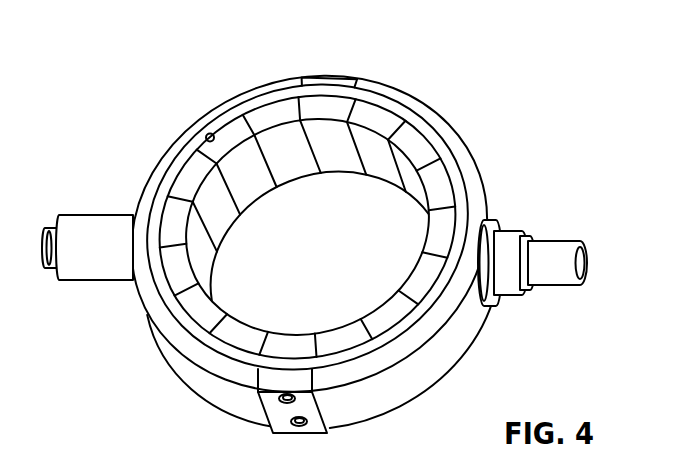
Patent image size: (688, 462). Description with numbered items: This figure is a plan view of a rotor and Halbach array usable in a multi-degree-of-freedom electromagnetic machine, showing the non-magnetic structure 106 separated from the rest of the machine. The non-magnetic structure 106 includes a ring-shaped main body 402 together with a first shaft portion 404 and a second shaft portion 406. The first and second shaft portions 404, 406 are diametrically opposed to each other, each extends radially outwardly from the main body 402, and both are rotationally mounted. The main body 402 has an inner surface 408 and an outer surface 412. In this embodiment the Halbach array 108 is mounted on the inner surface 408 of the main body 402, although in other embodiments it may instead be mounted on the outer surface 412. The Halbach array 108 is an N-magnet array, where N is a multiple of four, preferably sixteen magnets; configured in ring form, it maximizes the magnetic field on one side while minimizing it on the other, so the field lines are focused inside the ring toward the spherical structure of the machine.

The non-magnetic structure 106 is at (321, 228).
The Halbach array 108 is at (270, 110).
The main body 402 is at (381, 102).
The first shaft portion 404 is at (83, 230).
The second shaft portion 406 is at (553, 237).
The inner surface 408 is at (206, 136).
The outer surface 412 is at (454, 341).